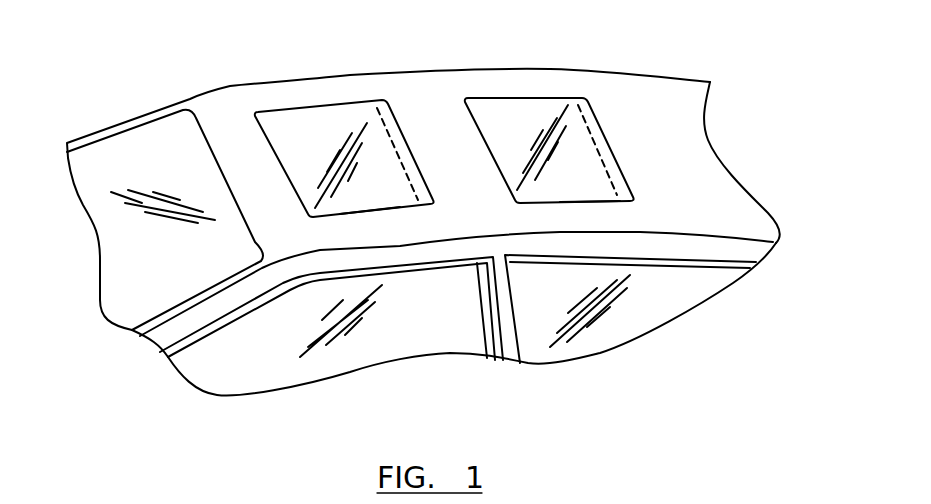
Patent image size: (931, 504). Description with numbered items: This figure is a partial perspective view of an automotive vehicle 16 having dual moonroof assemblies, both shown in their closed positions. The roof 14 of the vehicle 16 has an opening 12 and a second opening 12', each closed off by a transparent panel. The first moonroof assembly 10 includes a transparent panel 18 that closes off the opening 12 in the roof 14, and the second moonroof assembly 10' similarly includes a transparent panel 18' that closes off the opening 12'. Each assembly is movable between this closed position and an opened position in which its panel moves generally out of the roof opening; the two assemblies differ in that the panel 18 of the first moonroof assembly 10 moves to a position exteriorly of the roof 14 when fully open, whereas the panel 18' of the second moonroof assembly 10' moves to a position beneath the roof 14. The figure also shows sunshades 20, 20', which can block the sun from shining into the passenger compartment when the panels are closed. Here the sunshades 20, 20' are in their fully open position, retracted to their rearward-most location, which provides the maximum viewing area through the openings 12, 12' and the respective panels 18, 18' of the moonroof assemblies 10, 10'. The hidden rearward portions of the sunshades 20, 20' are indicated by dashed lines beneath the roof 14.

The moonroof assembly 10 is at (344, 124).
The second moonroof assembly 10' is at (549, 116).
The opening 12 is at (318, 119).
The opening 12' is at (526, 110).
The roof 14 is at (678, 149).
The vehicle 16 is at (748, 102).
The transparent panel 18 is at (376, 298).
The transparent panel 18' is at (626, 279).
The sunshade 20 is at (420, 257).
The sunshade 20' is at (692, 150).